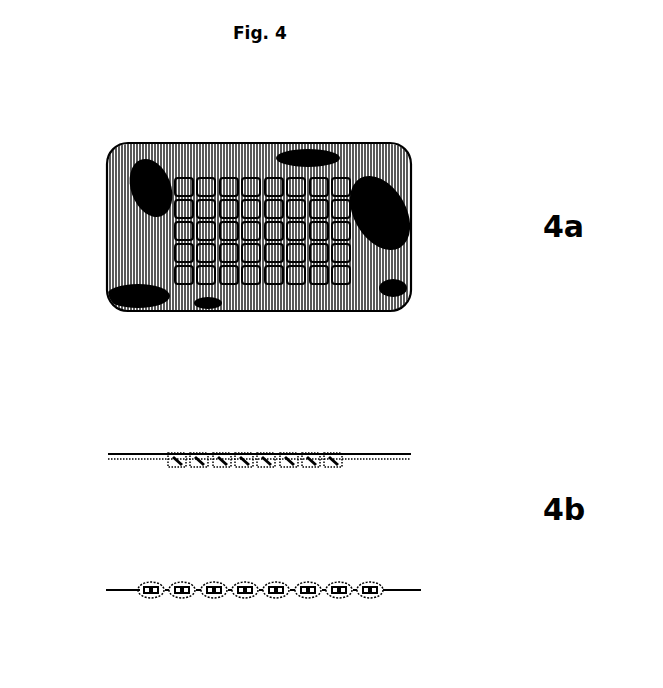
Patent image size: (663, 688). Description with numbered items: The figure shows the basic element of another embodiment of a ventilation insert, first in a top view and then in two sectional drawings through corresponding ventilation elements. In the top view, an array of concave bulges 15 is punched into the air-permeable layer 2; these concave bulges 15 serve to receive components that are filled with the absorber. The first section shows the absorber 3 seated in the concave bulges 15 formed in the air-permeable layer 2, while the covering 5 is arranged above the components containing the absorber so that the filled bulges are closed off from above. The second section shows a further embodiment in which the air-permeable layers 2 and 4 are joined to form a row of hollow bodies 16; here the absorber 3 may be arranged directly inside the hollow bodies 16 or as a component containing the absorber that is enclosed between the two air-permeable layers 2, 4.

In FIG. 4a, the air-permeable layer 2 is at (128, 183).
In FIG. 4b, the air-permeable layer 2 is at (107, 452).
In FIG. 4a, the concave bulges 15 is at (343, 173).
In FIG. 4b, the concave bulges 15 is at (166, 452).
In FIG. 4b, the covering 5 is at (125, 441).
In FIG. 4b, the absorber 3 is at (320, 457).
In FIG. 4b, the air-permeable layer 4 is at (141, 590).
In FIG. 4b, the hollow bodies 16 is at (367, 578).